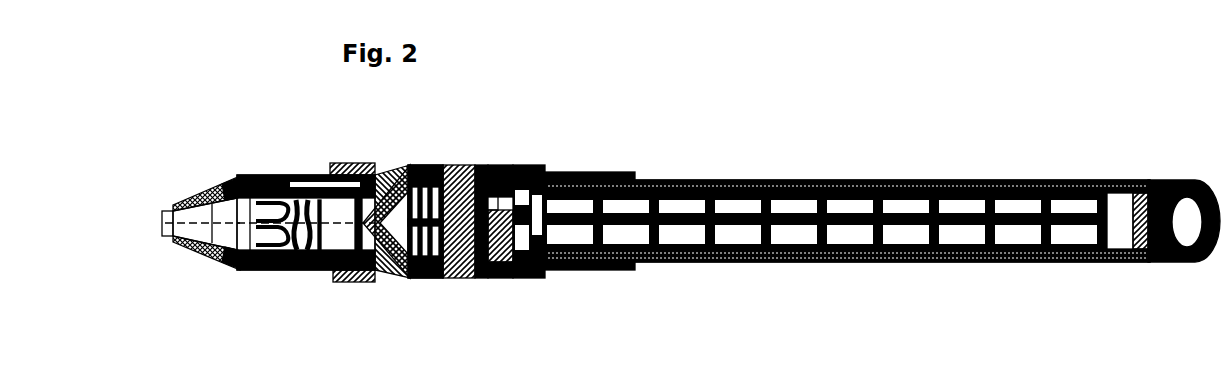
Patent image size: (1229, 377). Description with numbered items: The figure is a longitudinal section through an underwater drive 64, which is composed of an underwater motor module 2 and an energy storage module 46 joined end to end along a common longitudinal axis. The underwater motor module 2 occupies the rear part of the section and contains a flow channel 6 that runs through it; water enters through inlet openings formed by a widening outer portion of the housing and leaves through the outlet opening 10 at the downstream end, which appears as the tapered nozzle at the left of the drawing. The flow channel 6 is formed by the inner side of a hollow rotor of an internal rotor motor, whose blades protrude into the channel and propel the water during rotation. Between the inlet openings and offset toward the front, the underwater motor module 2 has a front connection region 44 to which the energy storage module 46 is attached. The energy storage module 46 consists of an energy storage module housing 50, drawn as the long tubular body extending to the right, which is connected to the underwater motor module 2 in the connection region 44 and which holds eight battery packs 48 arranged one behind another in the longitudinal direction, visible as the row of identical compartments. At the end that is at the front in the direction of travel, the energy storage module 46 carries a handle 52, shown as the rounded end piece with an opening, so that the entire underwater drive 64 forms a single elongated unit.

The underwater motor module 2 is at (283, 157).
The flow channel 6 is at (330, 243).
The outlet opening 10 is at (160, 222).
The front connection region 44 is at (469, 179).
The energy storage module 46 is at (757, 148).
The battery pack 48 is at (739, 249).
The energy storage module housing 50 is at (847, 180).
The handle 52 is at (1163, 191).
The underwater drive 64 is at (608, 98).